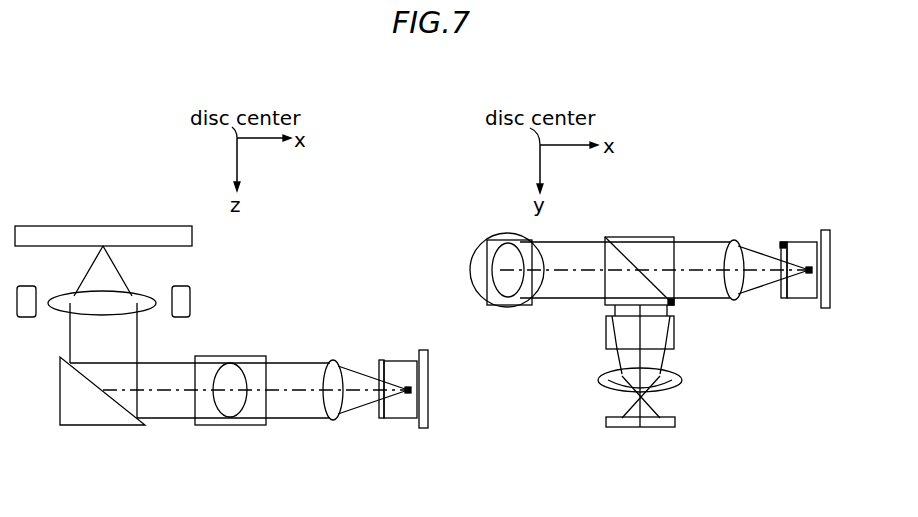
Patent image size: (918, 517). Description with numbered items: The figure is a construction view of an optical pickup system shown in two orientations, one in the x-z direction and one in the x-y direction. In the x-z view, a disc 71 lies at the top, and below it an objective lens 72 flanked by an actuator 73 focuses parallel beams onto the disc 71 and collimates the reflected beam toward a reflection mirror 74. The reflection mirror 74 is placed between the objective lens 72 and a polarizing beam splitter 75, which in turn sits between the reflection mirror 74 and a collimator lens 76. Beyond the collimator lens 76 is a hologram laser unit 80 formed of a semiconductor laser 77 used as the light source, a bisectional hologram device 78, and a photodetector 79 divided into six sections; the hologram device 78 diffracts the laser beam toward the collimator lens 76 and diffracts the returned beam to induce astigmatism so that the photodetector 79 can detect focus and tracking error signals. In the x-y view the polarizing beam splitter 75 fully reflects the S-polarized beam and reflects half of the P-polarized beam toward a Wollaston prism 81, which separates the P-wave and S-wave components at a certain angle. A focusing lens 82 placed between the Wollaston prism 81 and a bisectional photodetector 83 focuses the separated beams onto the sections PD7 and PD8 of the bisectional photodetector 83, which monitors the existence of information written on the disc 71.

The disc 71 is at (192, 236).
The objective lens 72 is at (145, 306).
The actuator 73 is at (188, 301).
The reflection mirror 74 is at (95, 426).
The polarizing beam splitter 75 is at (230, 426).
The collimator lens 76 is at (333, 420).
The semiconductor laser 77 is at (410, 418).
The bisectional hologram device 78 is at (381, 418).
The photodetector divided-by-six 79 is at (428, 428).
The hologram laser unit 80 is at (402, 360).
The Wollaston prism 81 is at (675, 330).
The focusing lens 82 is at (682, 382).
The bisectional photodetector 83 is at (675, 421).
The section PD7 is at (621, 428).
The section PD8 is at (664, 428).